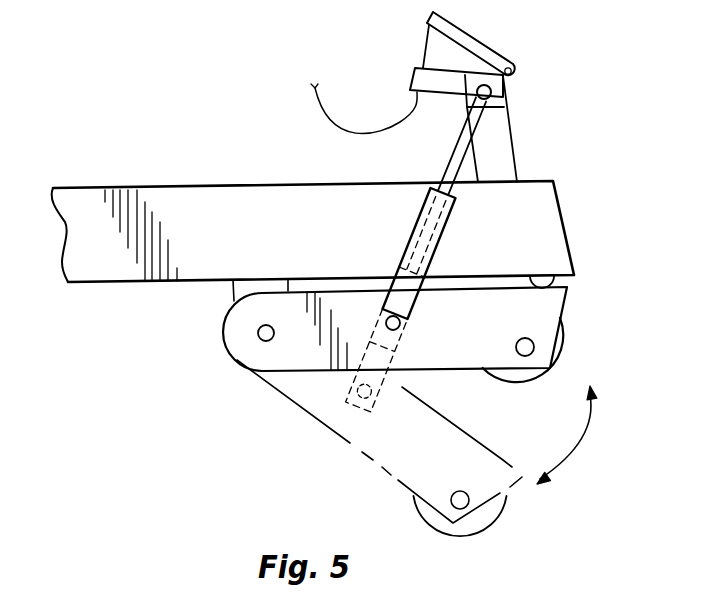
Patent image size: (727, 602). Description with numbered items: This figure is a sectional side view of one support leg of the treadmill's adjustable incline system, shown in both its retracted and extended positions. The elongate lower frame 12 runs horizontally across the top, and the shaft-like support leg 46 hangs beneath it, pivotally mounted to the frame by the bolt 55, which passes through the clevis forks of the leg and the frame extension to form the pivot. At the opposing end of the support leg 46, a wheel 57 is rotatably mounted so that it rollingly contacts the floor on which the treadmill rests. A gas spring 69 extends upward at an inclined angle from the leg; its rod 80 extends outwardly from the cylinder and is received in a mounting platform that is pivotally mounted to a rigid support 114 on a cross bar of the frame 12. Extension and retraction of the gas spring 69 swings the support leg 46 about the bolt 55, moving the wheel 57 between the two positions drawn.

The lower frame 12 is at (228, 248).
The rigid support 114 is at (510, 98).
The rod 80 is at (467, 157).
The gas spring 69 is at (388, 283).
The support leg 46 is at (410, 436).
The bolt 55 is at (258, 335).
The wheel 57 is at (492, 518).